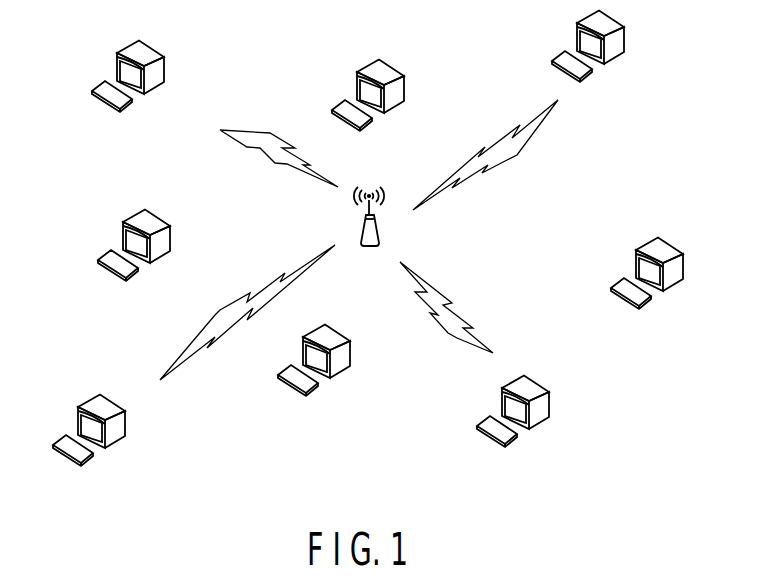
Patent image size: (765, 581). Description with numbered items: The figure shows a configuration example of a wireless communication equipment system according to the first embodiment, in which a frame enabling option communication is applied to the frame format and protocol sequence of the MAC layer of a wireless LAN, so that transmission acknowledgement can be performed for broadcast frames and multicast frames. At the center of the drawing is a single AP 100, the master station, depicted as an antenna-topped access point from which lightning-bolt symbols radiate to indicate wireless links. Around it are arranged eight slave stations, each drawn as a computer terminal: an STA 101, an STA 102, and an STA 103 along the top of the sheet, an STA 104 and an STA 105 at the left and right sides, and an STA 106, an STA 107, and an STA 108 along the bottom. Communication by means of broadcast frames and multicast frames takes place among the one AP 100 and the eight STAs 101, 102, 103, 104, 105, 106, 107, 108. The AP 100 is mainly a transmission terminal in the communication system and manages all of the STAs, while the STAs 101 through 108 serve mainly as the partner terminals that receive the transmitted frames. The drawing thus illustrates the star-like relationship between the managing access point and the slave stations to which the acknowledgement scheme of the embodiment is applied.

The AP 100 is at (365, 232).
The STA 101 is at (123, 80).
The STA 102 is at (363, 99).
The STA 103 is at (583, 50).
The STA 104 is at (129, 249).
The STA 105 is at (642, 277).
The STA 106 is at (84, 434).
The STA 107 is at (309, 364).
The STA 108 is at (508, 415).